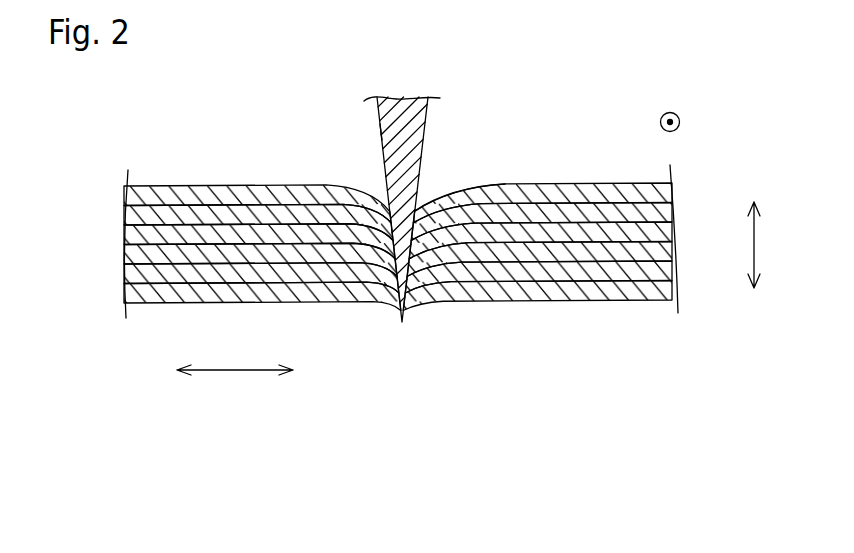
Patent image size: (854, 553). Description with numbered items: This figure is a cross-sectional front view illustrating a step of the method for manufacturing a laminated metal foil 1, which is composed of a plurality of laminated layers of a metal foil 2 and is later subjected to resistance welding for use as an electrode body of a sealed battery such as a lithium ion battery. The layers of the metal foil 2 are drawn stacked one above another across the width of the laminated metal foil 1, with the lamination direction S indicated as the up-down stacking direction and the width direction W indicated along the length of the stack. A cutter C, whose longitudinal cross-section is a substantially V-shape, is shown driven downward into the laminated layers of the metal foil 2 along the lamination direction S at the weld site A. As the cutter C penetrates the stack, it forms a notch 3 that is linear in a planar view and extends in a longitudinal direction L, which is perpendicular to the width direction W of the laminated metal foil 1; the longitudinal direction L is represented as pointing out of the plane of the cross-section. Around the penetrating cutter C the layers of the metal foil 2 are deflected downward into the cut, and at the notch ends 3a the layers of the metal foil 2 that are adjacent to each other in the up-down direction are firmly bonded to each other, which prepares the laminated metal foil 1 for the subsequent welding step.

The laminated metal foil 1 is at (191, 157).
The metal foil 2 is at (591, 214).
The notch 3 is at (397, 226).
The notch end 3a is at (376, 242).
The cutter C is at (386, 146).
The weld site A is at (439, 168).
The longitudinal direction L is at (677, 115).
The lamination direction S is at (757, 245).
The width direction W is at (231, 372).